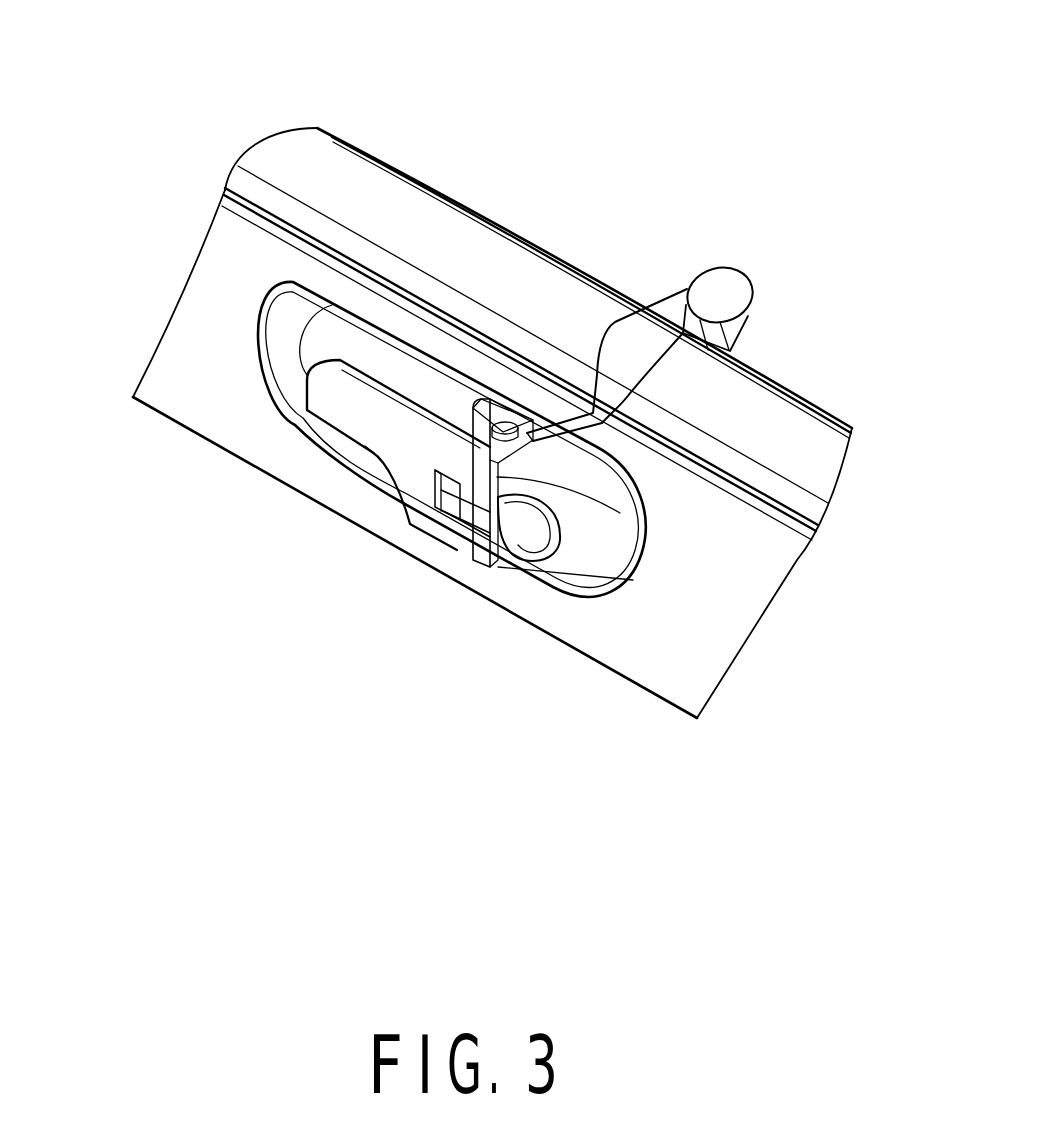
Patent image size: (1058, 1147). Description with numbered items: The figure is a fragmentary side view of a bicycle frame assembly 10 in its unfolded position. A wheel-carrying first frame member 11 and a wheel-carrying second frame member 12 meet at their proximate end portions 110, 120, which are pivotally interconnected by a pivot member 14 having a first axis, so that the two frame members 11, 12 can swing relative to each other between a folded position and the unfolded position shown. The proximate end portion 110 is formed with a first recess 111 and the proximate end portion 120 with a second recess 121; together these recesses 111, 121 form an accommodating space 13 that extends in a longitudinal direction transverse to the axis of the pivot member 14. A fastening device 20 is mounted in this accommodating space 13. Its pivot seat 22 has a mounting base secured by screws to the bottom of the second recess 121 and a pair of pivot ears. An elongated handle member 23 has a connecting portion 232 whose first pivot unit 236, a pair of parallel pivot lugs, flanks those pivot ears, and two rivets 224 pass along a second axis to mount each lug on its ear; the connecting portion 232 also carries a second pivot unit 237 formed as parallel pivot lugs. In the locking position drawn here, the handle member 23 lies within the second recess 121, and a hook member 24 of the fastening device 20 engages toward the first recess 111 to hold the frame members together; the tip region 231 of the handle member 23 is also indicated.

The bicycle frame assembly 10 is at (797, 387).
The first frame member 11 is at (812, 420).
The proximate end portion 110 is at (723, 647).
The first recess 111 is at (645, 622).
The proximate end portion 120 is at (187, 413).
The second recess 121 is at (294, 417).
The second frame member 12 is at (607, 310).
The pivot seat 22 is at (507, 423).
The rivets 224 is at (727, 267).
The pivot member 14 is at (737, 297).
The accommodating space 13 is at (393, 360).
The upper end of lever 231 is at (363, 373).
The handle member 23 is at (372, 452).
The fastening device 20 is at (450, 557).
The connecting portion 232 is at (470, 555).
The first pivot unit 236 is at (458, 522).
The second pivot unit 237 is at (425, 505).
The hook member 24 is at (555, 572).